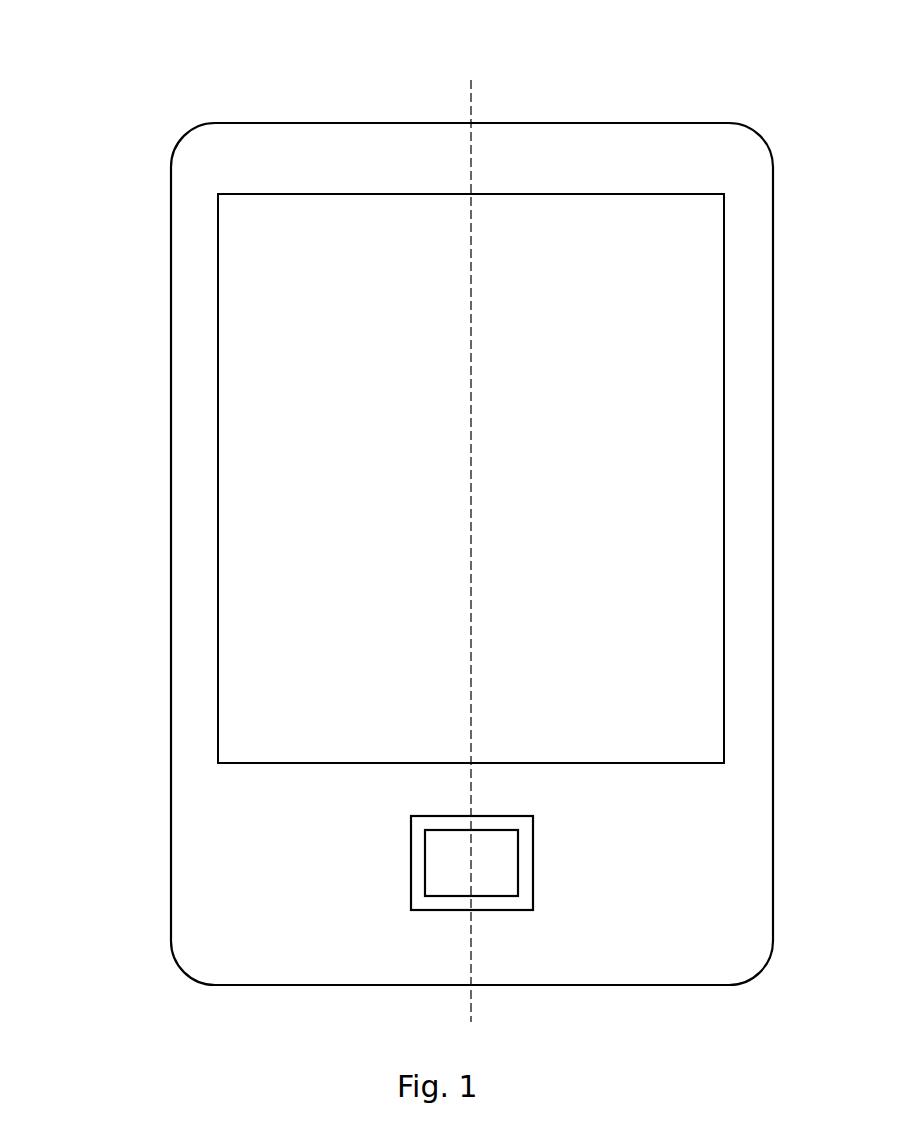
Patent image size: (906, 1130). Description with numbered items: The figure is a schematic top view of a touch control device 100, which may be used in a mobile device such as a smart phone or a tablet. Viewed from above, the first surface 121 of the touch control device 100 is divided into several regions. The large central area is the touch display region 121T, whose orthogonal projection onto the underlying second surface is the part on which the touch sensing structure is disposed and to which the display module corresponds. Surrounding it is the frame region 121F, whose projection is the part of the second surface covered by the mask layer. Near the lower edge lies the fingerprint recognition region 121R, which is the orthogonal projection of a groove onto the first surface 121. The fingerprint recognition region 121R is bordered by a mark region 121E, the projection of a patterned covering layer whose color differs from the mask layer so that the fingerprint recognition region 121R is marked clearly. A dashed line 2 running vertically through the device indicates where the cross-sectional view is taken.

The touch control device 100 is at (193, 78).
The line 2 is at (472, 80).
The first surface 121 is at (80, 693).
The touch display region 121T is at (247, 704).
The frame region 121F is at (200, 737).
The fingerprint recognition region 121R is at (452, 862).
The mark region 121E is at (420, 887).